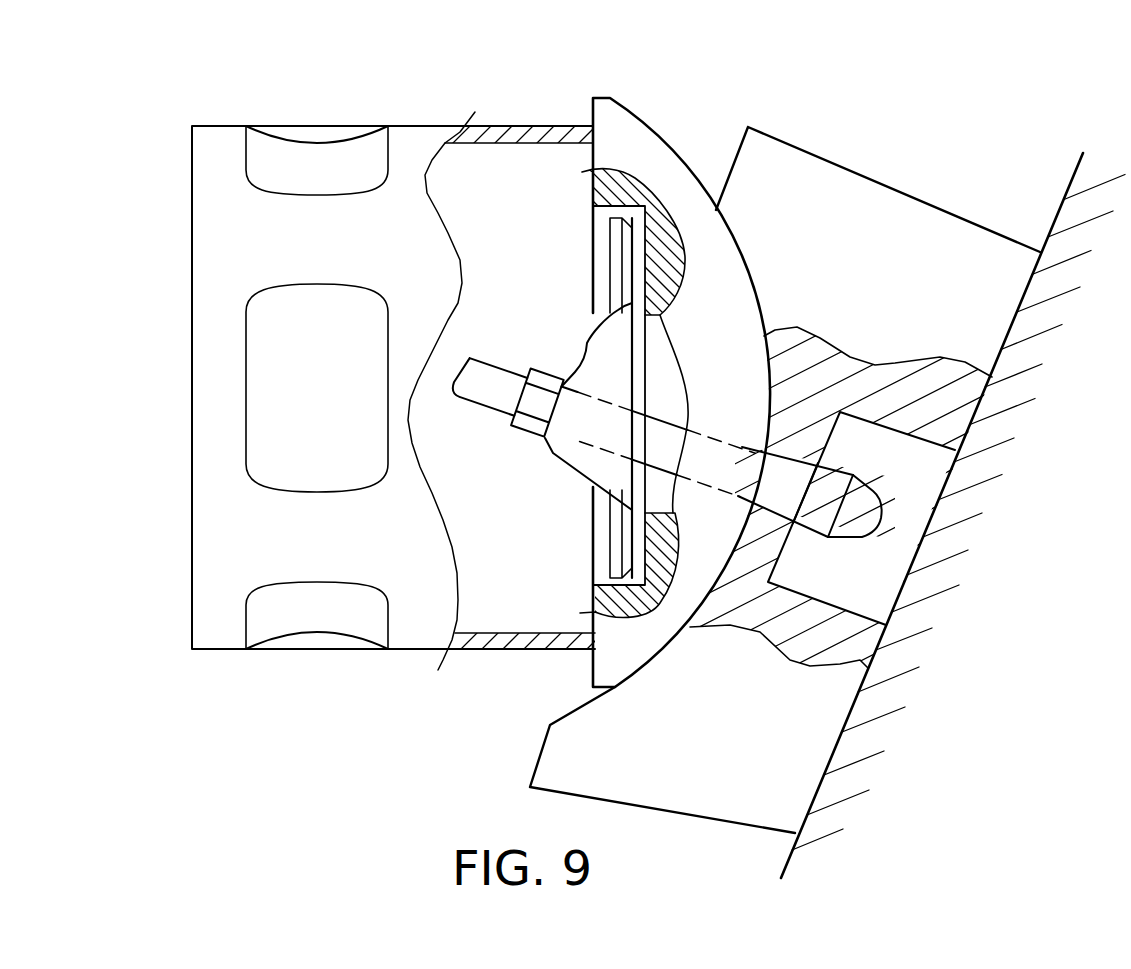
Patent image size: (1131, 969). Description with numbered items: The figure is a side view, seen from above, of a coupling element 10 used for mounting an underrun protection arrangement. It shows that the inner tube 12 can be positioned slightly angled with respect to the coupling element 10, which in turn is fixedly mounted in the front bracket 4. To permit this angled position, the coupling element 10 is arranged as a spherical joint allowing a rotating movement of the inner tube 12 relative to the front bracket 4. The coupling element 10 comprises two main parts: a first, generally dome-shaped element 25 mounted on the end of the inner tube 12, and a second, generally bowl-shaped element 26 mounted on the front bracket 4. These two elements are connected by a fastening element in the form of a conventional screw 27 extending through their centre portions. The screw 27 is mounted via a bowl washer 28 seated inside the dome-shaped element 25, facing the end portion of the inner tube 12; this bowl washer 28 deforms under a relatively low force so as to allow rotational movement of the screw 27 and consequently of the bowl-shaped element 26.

The front bracket 4 is at (790, 858).
The coupling element 10 is at (968, 138).
The inner tube 12 is at (232, 630).
The dome-shaped element 25 is at (612, 122).
The bowl-shaped element 26 is at (793, 157).
The screw 27 is at (602, 423).
The bowl washer 28 is at (602, 360).